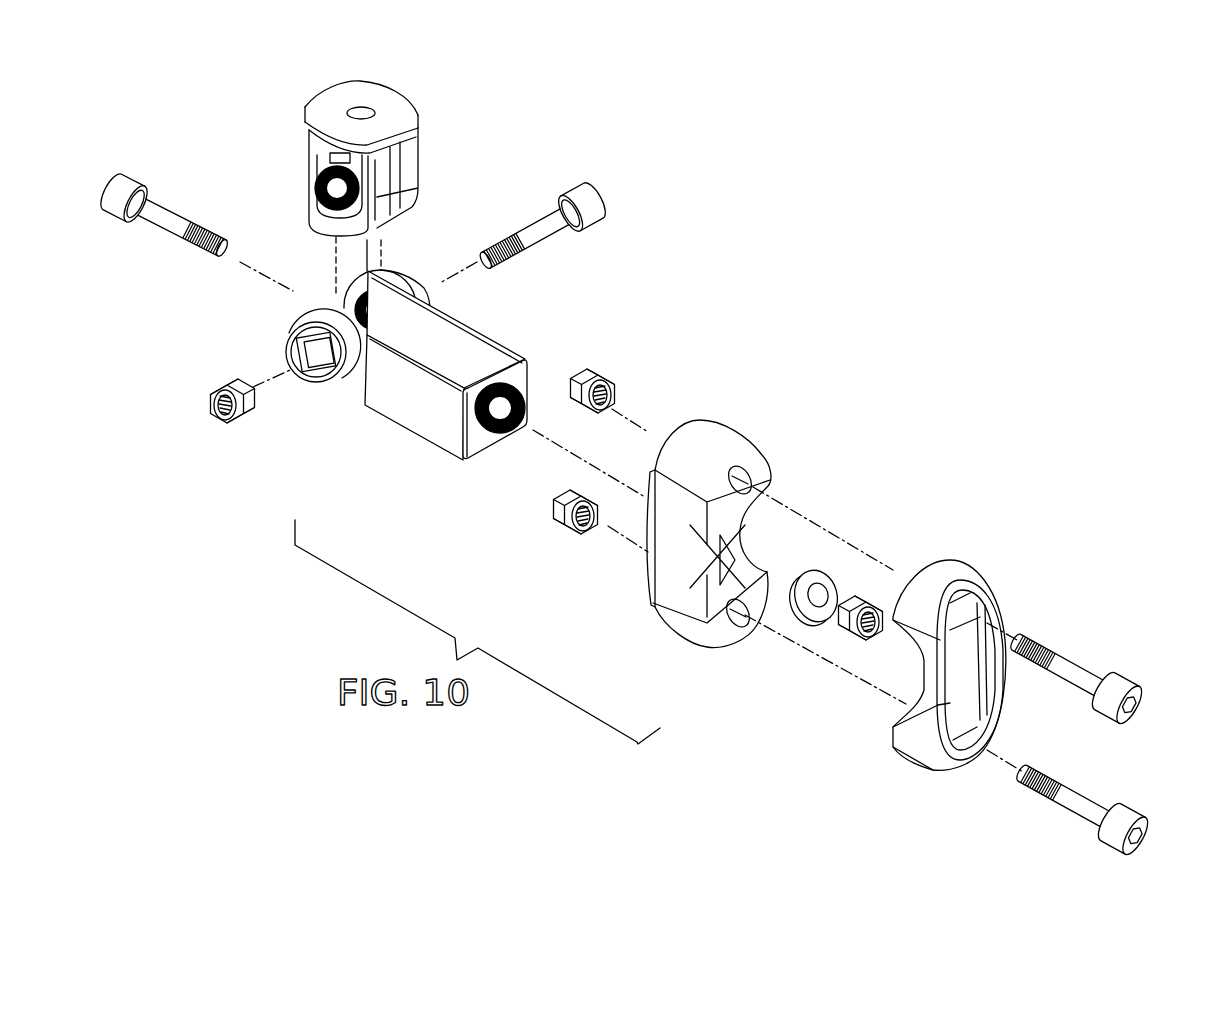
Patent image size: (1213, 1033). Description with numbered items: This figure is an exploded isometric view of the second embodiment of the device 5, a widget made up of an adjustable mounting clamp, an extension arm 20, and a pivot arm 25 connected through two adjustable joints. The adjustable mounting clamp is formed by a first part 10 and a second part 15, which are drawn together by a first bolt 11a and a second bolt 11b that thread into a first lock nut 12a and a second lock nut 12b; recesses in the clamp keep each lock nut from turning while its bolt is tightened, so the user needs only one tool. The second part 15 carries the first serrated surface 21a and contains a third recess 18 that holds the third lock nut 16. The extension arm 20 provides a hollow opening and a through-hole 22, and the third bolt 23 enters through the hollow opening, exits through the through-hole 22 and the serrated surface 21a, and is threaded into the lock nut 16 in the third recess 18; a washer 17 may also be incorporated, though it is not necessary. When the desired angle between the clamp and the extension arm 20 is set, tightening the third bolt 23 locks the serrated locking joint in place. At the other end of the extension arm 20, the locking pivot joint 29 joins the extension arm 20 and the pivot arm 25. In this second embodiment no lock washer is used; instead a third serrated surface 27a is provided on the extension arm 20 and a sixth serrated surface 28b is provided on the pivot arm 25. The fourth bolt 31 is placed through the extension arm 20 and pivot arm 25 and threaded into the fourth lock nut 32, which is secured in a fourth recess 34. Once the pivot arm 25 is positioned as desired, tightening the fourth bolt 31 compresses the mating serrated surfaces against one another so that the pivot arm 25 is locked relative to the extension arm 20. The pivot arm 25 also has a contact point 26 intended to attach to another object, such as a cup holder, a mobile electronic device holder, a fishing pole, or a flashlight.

The device 5 is at (1023, 226).
The first part of clamp 10 is at (940, 560).
The first bolt 11a is at (1123, 677).
The second bolt 11b is at (1127, 813).
The first lock nut 12a is at (601, 376).
The second lock nut 12b is at (553, 523).
The second part of clamp 15 is at (690, 515).
The third lock nut 16 is at (860, 597).
The washer 17 is at (823, 573).
The third recess 18 is at (713, 545).
The extension arm 20 is at (431, 391).
The first serrated surface 21a is at (502, 437).
The through-hole in first end of extension arm 22 is at (502, 408).
The third bolt 23 is at (137, 174).
The pivot arm 25 is at (304, 138).
The contact point 26 is at (352, 90).
The third serrated surface 27a is at (410, 308).
The sixth serrated surface 28b is at (298, 191).
The locking pivot joint 29 is at (490, 255).
The fourth bolt 31 is at (568, 184).
The fourth lock nut 32 is at (253, 417).
The fourth recess 34 is at (335, 366).